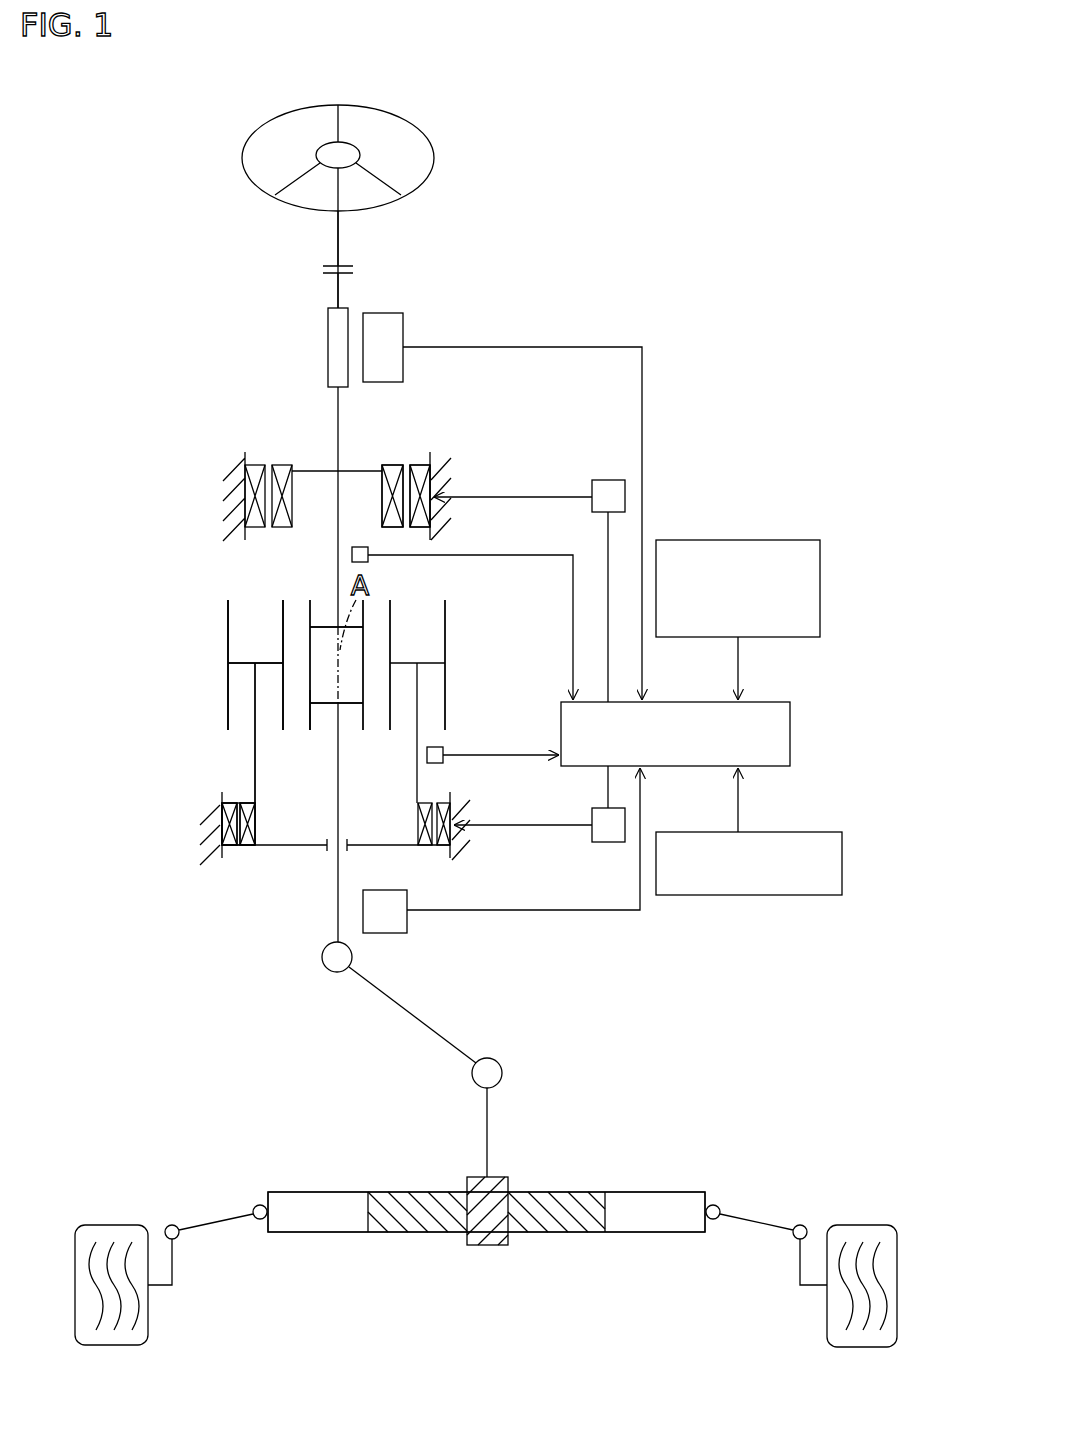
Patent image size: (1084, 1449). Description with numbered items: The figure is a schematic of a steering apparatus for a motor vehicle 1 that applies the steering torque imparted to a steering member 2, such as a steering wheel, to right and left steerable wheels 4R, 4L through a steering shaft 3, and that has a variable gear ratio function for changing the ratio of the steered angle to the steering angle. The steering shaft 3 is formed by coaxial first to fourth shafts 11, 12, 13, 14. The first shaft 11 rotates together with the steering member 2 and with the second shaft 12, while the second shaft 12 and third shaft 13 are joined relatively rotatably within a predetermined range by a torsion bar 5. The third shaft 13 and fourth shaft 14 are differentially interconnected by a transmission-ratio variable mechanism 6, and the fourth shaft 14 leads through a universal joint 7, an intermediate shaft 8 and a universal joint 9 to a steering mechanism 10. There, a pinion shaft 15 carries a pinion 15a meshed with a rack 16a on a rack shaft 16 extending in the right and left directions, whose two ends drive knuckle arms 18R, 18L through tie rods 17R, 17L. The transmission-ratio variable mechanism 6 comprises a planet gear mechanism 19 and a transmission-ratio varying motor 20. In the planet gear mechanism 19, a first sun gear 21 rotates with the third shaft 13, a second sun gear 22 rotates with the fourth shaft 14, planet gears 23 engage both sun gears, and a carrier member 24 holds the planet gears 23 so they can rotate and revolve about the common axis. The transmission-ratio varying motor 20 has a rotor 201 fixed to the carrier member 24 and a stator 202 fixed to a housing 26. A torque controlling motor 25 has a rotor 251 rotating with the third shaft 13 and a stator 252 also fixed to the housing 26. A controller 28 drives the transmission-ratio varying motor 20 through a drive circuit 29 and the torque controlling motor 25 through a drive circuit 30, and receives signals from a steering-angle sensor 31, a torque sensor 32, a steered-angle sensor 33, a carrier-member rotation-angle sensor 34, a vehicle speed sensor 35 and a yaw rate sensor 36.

The steering apparatus for a motor vehicle 1 is at (688, 120).
The steering member 2 is at (405, 115).
The steering shaft 3 is at (343, 236).
The left steerable wheel 4L is at (112, 1225).
The right steerable wheel 4R is at (865, 1225).
The torsion bar 5 is at (328, 345).
The transmission-ratio variable mechanism 6 is at (68, 680).
The universal joint 7 is at (330, 972).
The intermediate shaft 8 is at (400, 1005).
The universal joint 9 is at (474, 1082).
The steering mechanism 10 is at (645, 1190).
The first shaft 11 is at (338, 248).
The second shaft 12 is at (338, 290).
The third shaft 13 is at (338, 418).
The fourth shaft 14 is at (340, 768).
The pinion shaft 15 is at (487, 1150).
The pinion 15a is at (510, 1245).
The rack shaft 16 is at (327, 1192).
The rack 16a is at (455, 1212).
The left tie rod 17L is at (215, 1220).
The right tie rod 17R is at (758, 1220).
The left knuckle arm 18L is at (175, 1262).
The right knuckle arm 18R is at (800, 1265).
The planet gear mechanism 19 is at (226, 697).
The transmission-ratio varying motor 20 is at (138, 738).
The rotor 201 is at (247, 800).
The stator 202 is at (228, 800).
The first sun gear 21 is at (310, 617).
The second sun gear 22 is at (310, 690).
The planet gears 23 is at (228, 622).
The carrier member 24 is at (257, 773).
The torque controlling motor 25 is at (352, 407).
The rotor 251 is at (390, 465).
The stator 252 is at (418, 465).
The housing 26 is at (240, 538).
The controller 28 is at (790, 733).
The drive circuit 29 is at (592, 815).
The drive circuit 30 is at (608, 480).
The steering-angle sensor 31 is at (360, 547).
The torque sensor 32 is at (383, 313).
The steered-angle sensor 33 is at (407, 925).
The carrier-member rotation-angle sensor 34 is at (445, 752).
The vehicle speed sensor 35 is at (775, 540).
The yaw rate sensor 36 is at (842, 862).